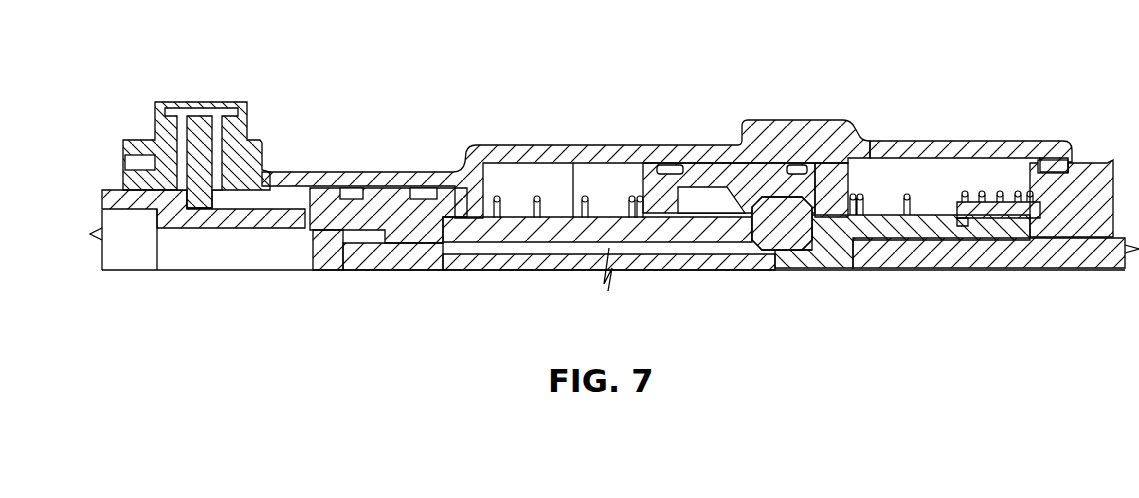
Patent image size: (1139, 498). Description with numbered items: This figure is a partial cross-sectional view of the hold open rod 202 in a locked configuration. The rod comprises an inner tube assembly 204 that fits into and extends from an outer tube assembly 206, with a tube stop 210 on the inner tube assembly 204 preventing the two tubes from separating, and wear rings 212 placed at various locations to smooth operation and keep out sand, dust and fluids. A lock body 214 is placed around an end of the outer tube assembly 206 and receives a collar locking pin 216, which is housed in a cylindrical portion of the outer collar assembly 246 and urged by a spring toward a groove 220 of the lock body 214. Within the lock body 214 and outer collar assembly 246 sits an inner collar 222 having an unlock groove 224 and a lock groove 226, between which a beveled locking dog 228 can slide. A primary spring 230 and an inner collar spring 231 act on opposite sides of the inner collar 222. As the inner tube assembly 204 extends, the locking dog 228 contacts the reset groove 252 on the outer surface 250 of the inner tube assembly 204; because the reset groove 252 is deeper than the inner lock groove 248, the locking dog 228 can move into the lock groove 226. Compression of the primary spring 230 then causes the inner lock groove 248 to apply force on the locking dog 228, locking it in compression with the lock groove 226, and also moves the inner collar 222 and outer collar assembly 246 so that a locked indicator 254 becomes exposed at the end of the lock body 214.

The hold open rod 202 is at (897, 288).
The inner tube assembly 204 is at (1073, 258).
The outer tube assembly 206 is at (120, 190).
The tube stop 210 is at (330, 256).
The wear rings 212 is at (370, 258).
The lock body 214 is at (460, 233).
The collar locking pin 216 is at (188, 142).
The groove 220 is at (307, 227).
The inner collar 222 is at (740, 172).
The unlock groove 224 is at (683, 190).
The lock groove 226 is at (820, 147).
The locking dog 228 is at (803, 250).
The primary spring 230 is at (907, 192).
The inner collar spring 231 is at (586, 197).
The outer collar assembly 246 is at (1000, 153).
The inner lock groove 248 is at (783, 247).
The outer surface 250 is at (495, 263).
The reset groove 252 is at (773, 256).
The locked indicator 254 is at (1083, 162).